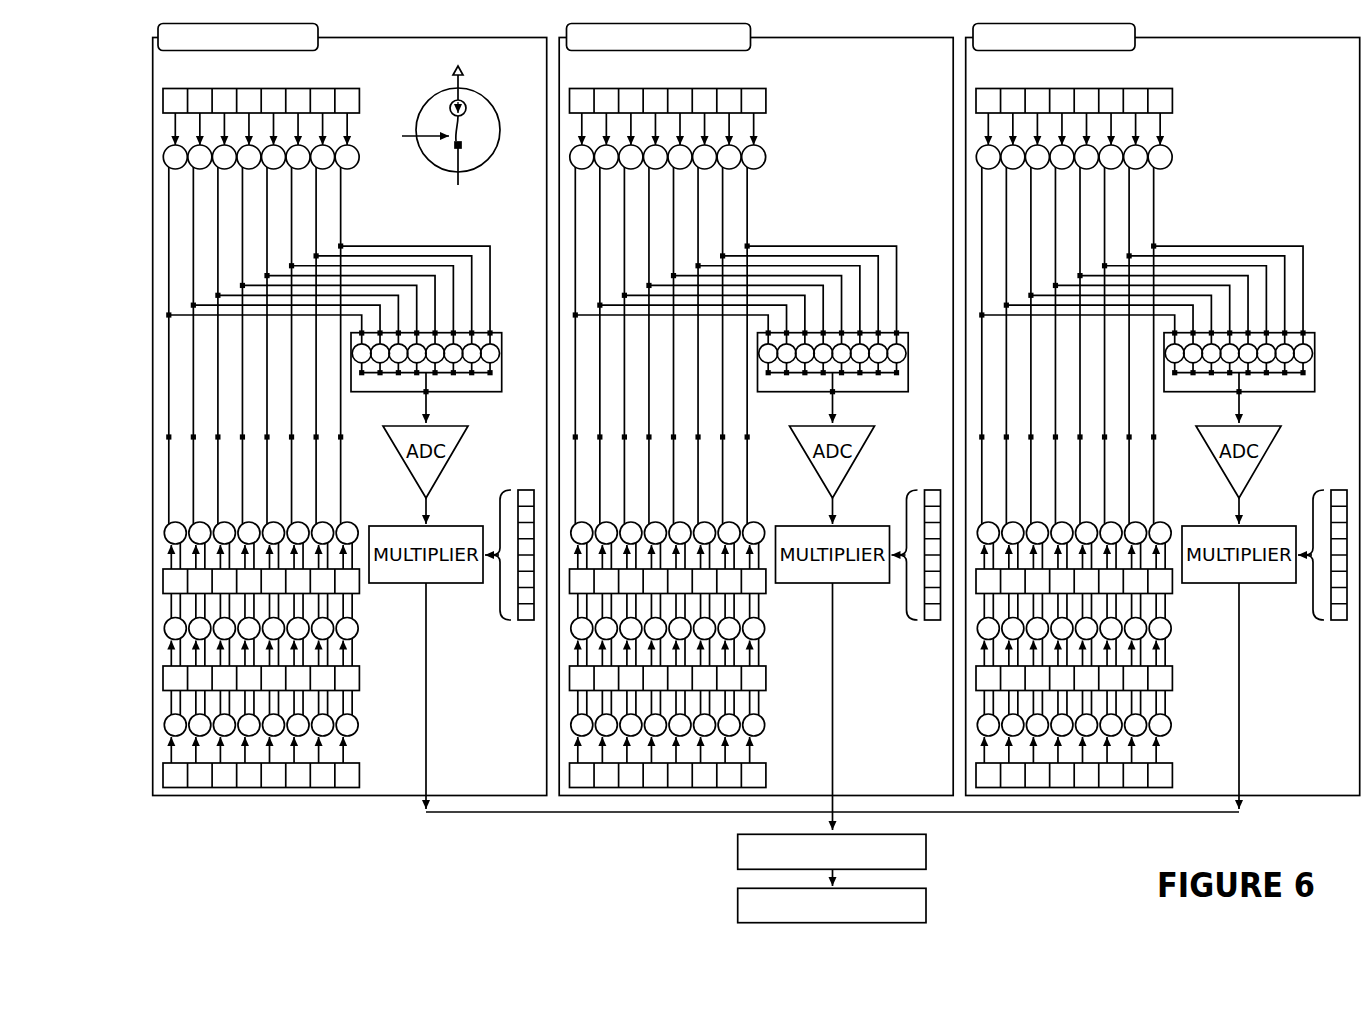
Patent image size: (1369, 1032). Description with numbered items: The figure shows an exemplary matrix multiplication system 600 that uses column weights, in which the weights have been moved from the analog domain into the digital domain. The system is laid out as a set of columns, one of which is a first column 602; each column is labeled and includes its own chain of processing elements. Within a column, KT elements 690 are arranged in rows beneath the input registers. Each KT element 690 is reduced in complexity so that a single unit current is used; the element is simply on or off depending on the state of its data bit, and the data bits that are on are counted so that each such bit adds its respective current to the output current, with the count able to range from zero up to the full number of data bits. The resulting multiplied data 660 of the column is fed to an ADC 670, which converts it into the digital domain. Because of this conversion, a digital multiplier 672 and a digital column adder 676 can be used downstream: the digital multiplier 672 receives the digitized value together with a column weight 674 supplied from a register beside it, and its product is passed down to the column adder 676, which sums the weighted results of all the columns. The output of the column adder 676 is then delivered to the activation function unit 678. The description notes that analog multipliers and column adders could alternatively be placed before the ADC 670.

The matrix multiplication system 600 is at (99, 78).
The first column 602 is at (282, 808).
The multiplied data 660 is at (425, 403).
The ADC 670 is at (453, 461).
The digital multiplier 672 is at (393, 584).
The column weight 674 is at (526, 622).
The column adder 676 is at (927, 851).
The activation function unit 678 is at (927, 906).
The KT element 690 is at (436, 93).